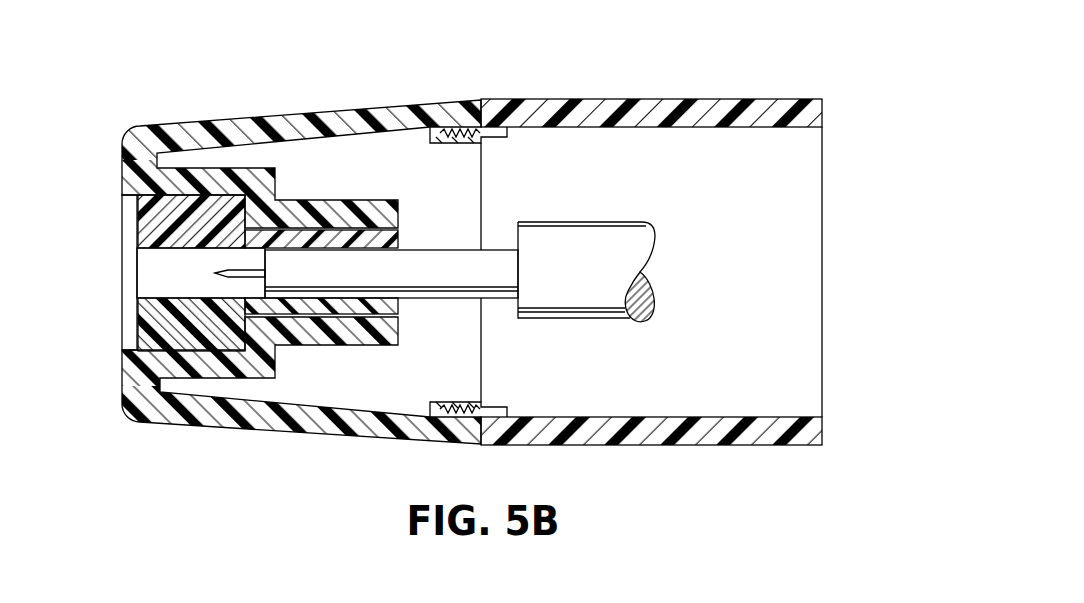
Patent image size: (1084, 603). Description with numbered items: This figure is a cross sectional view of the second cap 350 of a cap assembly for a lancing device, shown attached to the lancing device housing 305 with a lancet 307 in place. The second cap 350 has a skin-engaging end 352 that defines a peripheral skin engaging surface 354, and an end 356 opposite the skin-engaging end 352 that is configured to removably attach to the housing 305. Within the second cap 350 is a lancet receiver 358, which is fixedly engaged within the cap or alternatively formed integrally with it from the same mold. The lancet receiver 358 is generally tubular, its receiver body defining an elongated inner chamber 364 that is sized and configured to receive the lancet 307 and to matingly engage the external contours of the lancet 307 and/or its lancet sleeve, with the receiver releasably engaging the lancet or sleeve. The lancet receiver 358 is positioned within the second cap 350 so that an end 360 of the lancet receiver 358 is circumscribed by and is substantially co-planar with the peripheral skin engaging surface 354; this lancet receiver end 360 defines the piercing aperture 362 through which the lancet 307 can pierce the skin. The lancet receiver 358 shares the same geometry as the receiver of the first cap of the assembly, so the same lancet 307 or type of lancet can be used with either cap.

The second cap 350 is at (335, 95).
The skin-engaging end 352 is at (123, 148).
The peripheral skin engaging surface 354 is at (128, 410).
The end opposite the skin-engaging end 356 is at (447, 430).
The lancet receiver 358 is at (170, 327).
The end of the lancet receiver 360 is at (137, 222).
The piercing aperture 362 is at (123, 268).
The elongated inner chamber 364 is at (165, 282).
The housing 305 is at (664, 433).
The lancet 307 is at (400, 282).